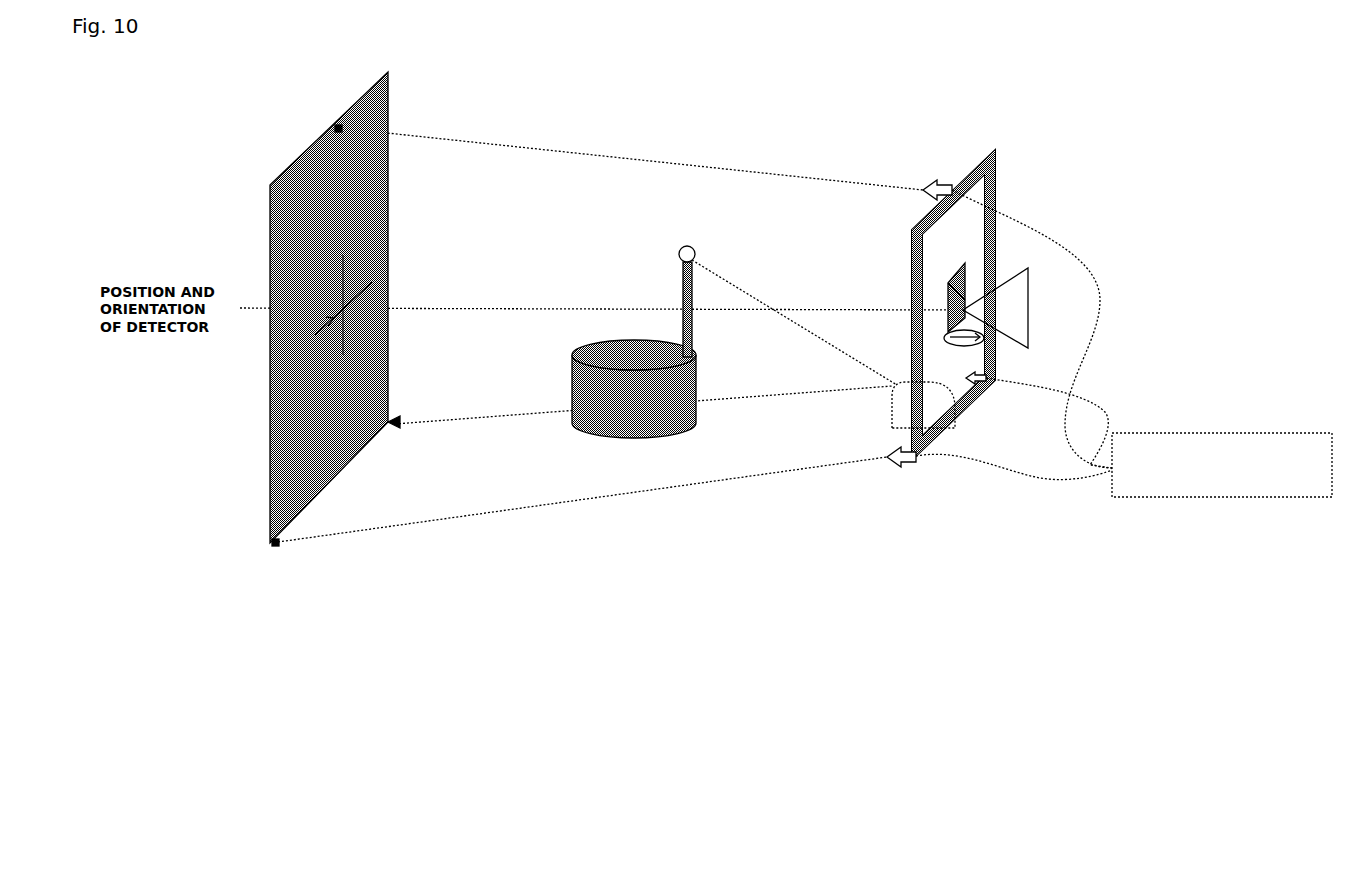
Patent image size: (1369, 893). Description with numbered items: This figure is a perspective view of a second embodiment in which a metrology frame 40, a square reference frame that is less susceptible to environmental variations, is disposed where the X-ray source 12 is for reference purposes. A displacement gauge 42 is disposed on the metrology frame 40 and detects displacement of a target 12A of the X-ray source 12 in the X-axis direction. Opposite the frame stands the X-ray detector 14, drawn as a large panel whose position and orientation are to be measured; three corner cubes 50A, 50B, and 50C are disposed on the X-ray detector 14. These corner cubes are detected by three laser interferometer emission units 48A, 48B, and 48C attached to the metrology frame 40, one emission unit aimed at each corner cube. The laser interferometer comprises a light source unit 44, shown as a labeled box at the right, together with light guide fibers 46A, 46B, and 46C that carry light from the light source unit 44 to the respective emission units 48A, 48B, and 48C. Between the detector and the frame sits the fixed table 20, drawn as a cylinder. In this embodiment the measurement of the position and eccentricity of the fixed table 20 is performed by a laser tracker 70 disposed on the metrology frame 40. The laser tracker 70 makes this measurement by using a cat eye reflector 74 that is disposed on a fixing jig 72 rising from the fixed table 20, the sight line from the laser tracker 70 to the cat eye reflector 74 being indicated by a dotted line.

The X-ray source 12 is at (1028, 312).
The target 12A is at (965, 300).
The X-ray detector 14 is at (270, 240).
The fixed table 20 is at (600, 432).
The metrology frame 40 is at (992, 165).
The displacement gauge 42 is at (976, 378).
The light source unit 44 is at (1278, 433).
The light guide fiber 46A is at (1101, 283).
The light guide fiber 46B is at (982, 458).
The light guide fiber 46C is at (1104, 410).
The laser interferometer emission unit 48A is at (936, 185).
The laser interferometer emission unit 48B is at (903, 465).
The laser interferometer emission unit 48C is at (987, 378).
The corner cube 50A is at (338, 127).
The corner cube 50B is at (277, 548).
The corner cube 50C is at (400, 420).
The laser tracker 70 is at (893, 410).
The fixing jig 72 is at (693, 330).
The cat eye reflector 74 is at (686, 246).